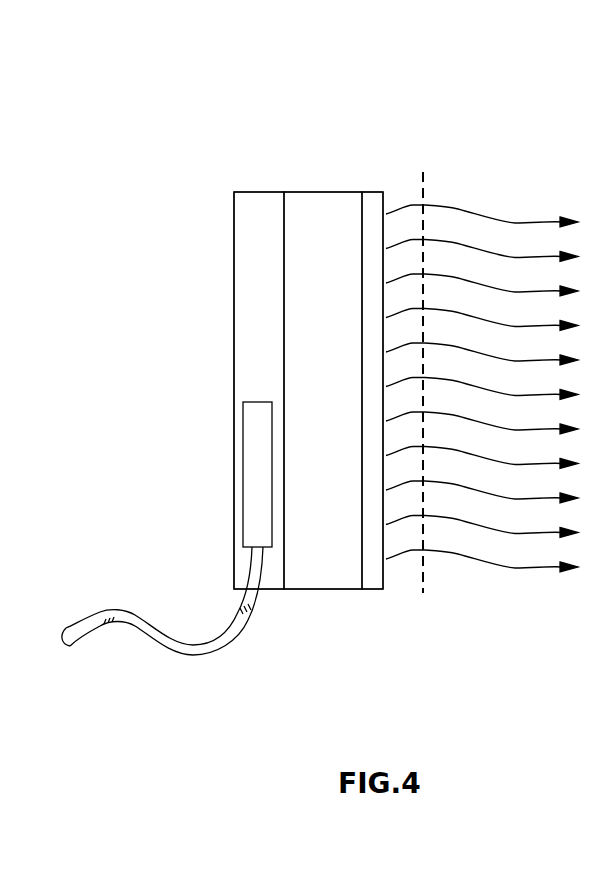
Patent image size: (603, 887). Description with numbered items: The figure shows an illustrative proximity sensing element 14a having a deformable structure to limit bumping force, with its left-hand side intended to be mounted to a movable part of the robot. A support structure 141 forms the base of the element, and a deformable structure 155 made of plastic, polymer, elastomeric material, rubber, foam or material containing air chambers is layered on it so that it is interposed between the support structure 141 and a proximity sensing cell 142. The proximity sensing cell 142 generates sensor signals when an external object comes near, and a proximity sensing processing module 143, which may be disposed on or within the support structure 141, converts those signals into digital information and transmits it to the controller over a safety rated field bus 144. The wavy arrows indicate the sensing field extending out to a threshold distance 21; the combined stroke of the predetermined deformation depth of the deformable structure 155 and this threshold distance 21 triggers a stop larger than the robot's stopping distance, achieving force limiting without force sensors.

The proximity sensing element 14a is at (179, 86).
The support structure 141 is at (252, 345).
The deformable structure 155 is at (300, 200).
The proximity sensing cell 142 is at (372, 205).
The proximity sensing processing module 143 is at (260, 483).
The safety rated field bus 144 is at (225, 647).
The threshold distance 21 is at (438, 183).